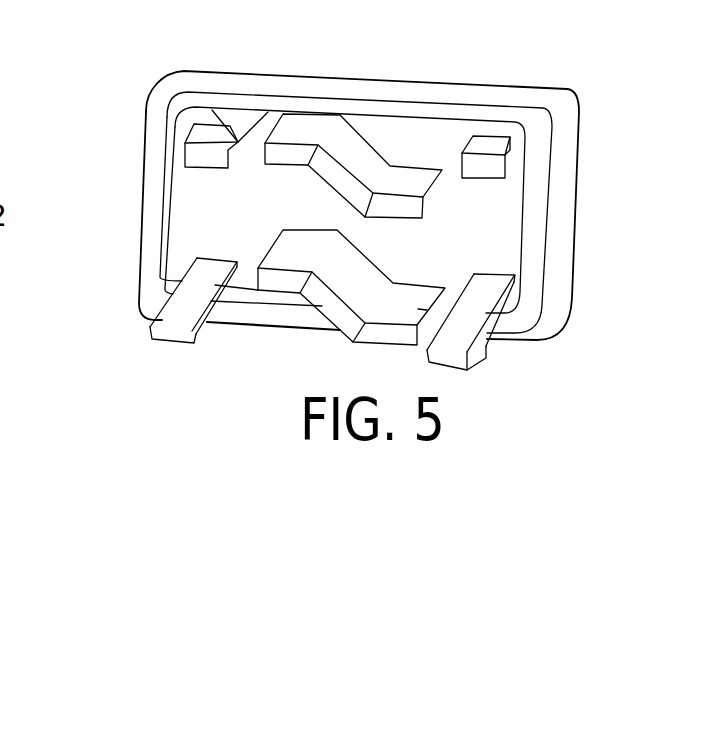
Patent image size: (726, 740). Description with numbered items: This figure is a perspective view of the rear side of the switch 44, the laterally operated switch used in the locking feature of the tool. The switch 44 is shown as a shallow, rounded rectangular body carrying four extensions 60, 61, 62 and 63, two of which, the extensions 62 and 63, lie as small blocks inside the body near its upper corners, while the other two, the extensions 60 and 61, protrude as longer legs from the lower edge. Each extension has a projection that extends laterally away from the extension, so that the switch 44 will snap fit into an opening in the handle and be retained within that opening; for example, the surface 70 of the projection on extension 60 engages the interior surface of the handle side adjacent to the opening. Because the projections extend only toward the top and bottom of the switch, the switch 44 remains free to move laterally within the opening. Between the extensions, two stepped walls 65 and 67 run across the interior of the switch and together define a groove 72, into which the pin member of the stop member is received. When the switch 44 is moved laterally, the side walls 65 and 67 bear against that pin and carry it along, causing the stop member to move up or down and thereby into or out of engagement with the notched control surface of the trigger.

The switch 44 is at (601, 209).
The groove 72 is at (397, 240).
The extension 62 is at (202, 123).
The extension 63 is at (492, 165).
The wall 67 is at (332, 172).
The wall 65 is at (325, 305).
The extension 60 is at (161, 358).
The extension 61 is at (451, 360).
The surface 70 is at (219, 334).